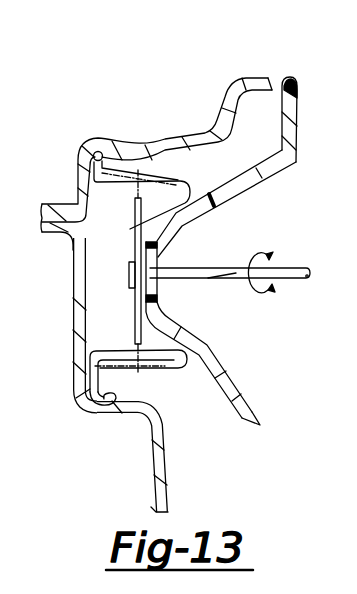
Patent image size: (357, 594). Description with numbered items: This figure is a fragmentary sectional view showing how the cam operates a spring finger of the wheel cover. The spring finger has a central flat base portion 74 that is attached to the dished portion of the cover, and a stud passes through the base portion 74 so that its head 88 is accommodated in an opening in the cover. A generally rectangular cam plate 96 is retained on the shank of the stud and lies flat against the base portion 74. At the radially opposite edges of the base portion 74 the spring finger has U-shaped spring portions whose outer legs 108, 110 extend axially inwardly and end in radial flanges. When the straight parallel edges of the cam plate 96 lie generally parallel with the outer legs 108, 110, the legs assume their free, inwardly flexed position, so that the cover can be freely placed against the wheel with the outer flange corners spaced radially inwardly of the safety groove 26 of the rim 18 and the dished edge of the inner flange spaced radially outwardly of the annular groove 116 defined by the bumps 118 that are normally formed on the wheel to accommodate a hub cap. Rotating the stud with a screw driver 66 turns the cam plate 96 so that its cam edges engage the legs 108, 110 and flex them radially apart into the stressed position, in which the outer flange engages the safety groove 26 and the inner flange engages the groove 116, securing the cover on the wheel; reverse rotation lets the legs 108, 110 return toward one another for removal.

The rim 18 is at (75, 200).
The safety groove 26 is at (101, 153).
The screw driver 66 is at (274, 268).
The base portion 74 is at (160, 298).
The head 88 is at (172, 246).
The cam plate 96 is at (136, 197).
The outer leg 108 is at (179, 182).
The outer leg 110 is at (108, 351).
The annular groove 116 is at (104, 408).
The bumps 118 is at (140, 404).